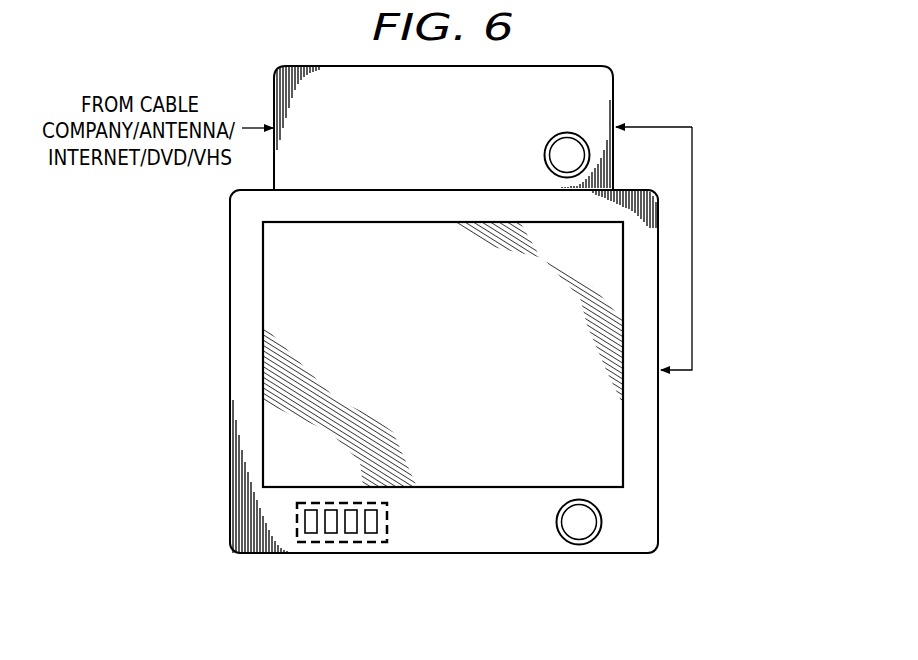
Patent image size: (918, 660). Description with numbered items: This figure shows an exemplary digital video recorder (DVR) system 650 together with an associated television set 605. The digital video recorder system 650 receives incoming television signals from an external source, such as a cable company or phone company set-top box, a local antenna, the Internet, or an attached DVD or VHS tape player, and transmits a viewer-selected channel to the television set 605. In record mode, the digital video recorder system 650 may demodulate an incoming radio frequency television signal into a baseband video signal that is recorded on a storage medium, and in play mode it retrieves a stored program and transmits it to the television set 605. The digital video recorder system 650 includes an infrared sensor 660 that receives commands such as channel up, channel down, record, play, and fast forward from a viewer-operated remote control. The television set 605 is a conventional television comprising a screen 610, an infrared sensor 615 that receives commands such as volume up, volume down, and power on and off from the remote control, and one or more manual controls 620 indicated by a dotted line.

The television set 605 is at (230, 388).
The screen 610 is at (440, 482).
The infrared (IR) sensor 615 is at (556, 521).
The manual controls 620 is at (322, 545).
The digital video recorder (DVR) system 650 is at (607, 93).
The infrared (IR) sensor 660 is at (545, 158).